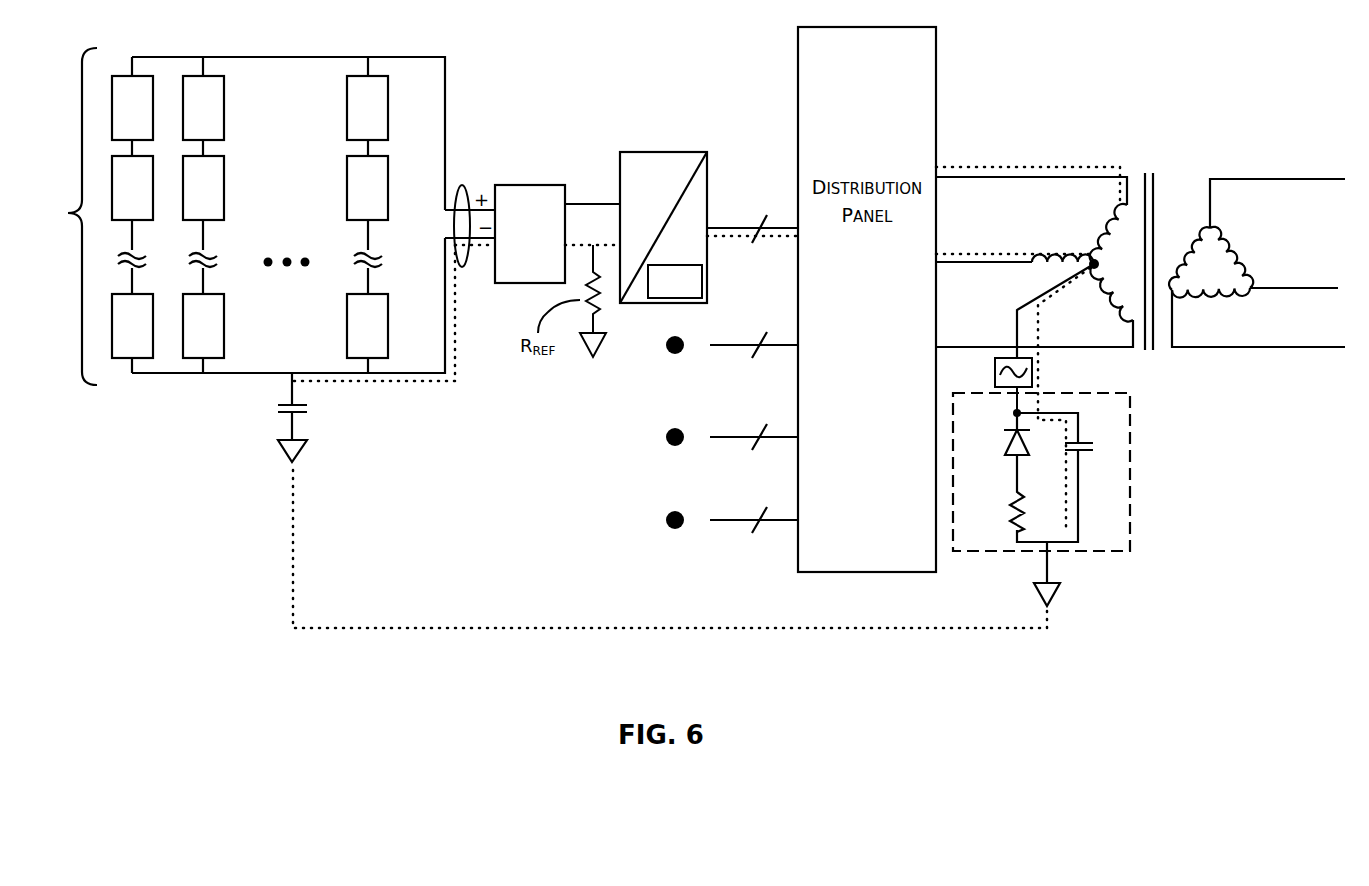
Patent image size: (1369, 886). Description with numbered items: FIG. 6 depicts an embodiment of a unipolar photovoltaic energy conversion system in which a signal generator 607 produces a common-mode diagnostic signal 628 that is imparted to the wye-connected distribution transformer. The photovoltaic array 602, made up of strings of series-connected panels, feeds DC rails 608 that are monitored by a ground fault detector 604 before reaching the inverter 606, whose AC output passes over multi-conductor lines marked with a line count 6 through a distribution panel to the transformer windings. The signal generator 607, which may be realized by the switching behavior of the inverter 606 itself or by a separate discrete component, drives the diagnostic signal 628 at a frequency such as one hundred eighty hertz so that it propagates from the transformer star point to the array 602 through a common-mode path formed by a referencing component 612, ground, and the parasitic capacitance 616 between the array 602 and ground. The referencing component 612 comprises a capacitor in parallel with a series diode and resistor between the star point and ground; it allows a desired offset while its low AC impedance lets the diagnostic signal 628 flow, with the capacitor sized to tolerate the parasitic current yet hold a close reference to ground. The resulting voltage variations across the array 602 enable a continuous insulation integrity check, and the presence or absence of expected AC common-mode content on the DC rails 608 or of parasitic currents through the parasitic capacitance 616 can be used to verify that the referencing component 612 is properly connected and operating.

The array 602 is at (235, 216).
The ground fault detector 604 is at (530, 234).
The inverter 606 is at (663, 227).
The signal generator 607 is at (675, 281).
The DC rails 608 is at (465, 185).
The referencing component 612 is at (1130, 408).
The parasitic capacitance 616 is at (305, 403).
The diagnostic signal 628 is at (455, 300).
The bus line count 6 is at (732, 363).